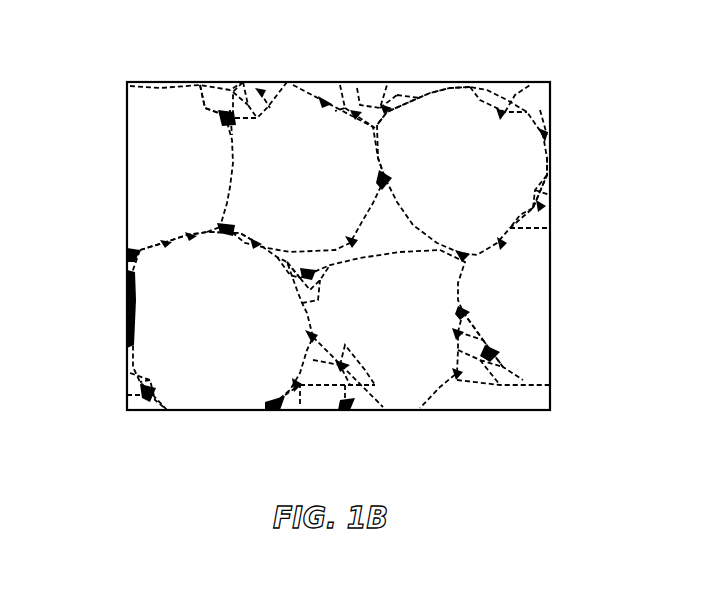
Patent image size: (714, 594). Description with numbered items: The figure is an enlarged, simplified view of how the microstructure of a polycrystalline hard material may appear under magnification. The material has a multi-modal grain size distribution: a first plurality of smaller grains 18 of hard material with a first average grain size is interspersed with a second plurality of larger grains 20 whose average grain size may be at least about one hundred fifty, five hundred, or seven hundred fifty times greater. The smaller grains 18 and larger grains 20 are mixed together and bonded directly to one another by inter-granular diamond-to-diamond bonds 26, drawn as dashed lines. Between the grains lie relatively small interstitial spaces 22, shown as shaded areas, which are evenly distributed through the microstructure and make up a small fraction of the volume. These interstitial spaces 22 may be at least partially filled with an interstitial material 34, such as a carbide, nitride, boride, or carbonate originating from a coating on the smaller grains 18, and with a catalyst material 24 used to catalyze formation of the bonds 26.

The first plurality of grains 18 is at (540, 205).
The second plurality of grains 20 is at (507, 163).
The interstitial spaces 22 is at (493, 355).
The catalyst material 24 is at (222, 117).
The inter-granular diamond-to-diamond bonds 26 is at (295, 300).
The interstitial material 34 is at (212, 217).